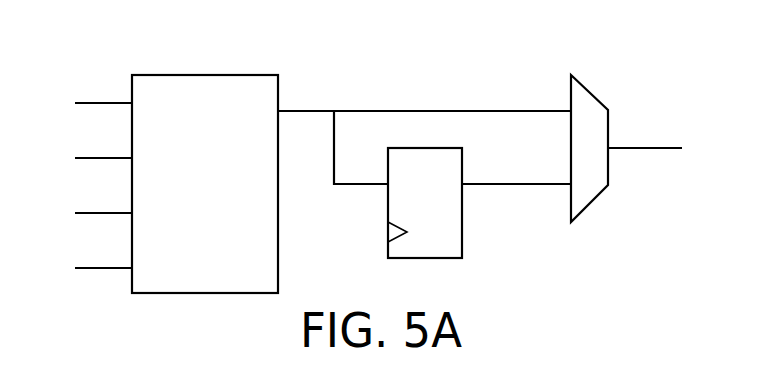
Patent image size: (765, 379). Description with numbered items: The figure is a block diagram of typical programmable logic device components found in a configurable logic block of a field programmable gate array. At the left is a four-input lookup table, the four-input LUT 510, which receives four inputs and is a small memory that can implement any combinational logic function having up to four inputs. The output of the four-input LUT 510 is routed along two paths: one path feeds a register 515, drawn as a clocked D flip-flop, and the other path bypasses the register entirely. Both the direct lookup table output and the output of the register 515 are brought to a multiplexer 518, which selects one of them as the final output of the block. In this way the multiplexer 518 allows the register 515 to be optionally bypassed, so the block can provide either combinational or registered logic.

The 4-input LUT 510 is at (185, 212).
The register 515 is at (446, 228).
The multiplexer 518 is at (595, 97).